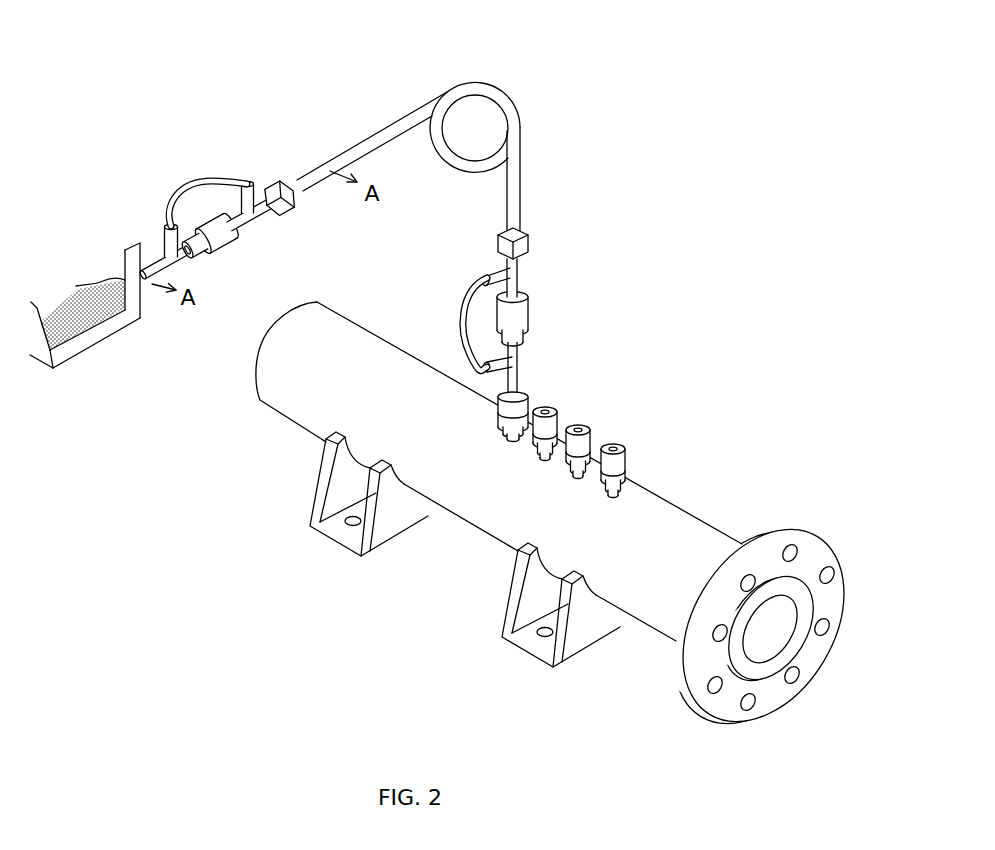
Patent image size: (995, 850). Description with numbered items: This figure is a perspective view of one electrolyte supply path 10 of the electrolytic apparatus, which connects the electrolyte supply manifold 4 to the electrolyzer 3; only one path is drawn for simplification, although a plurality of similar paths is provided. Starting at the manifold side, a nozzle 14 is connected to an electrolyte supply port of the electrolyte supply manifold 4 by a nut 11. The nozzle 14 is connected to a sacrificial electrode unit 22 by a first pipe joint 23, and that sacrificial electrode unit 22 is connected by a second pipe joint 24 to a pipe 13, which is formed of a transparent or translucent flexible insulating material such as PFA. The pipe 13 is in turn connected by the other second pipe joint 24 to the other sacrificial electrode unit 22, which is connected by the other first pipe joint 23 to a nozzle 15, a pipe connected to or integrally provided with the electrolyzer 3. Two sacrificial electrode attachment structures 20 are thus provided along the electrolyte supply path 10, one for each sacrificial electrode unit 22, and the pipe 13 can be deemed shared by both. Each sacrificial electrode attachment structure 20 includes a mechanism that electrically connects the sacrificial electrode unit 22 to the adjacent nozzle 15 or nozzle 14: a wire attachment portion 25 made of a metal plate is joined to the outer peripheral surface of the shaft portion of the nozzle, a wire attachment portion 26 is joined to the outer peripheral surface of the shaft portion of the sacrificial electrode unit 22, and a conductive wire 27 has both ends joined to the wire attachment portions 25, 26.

The electrolyzer 3 is at (92, 347).
The electrolyte supply manifold 4 is at (702, 512).
The electrolyte supply path 10 is at (526, 114).
The nut 11 is at (525, 403).
The pipe (second pipe) 13 is at (521, 208).
The nozzle (first pipe) 14 is at (520, 375).
The nozzle (first pipe) 15 is at (150, 255).
The sacrificial electrode attachment structure 20 is at (433, 218).
The sacrificial electrode unit 22 is at (519, 272).
The first pipe joint 23 is at (529, 313).
The second pipe joint 24 is at (529, 245).
The wire attachment portion 25 is at (485, 370).
The wire attachment portion 26 is at (484, 279).
The wire 27 is at (460, 323).